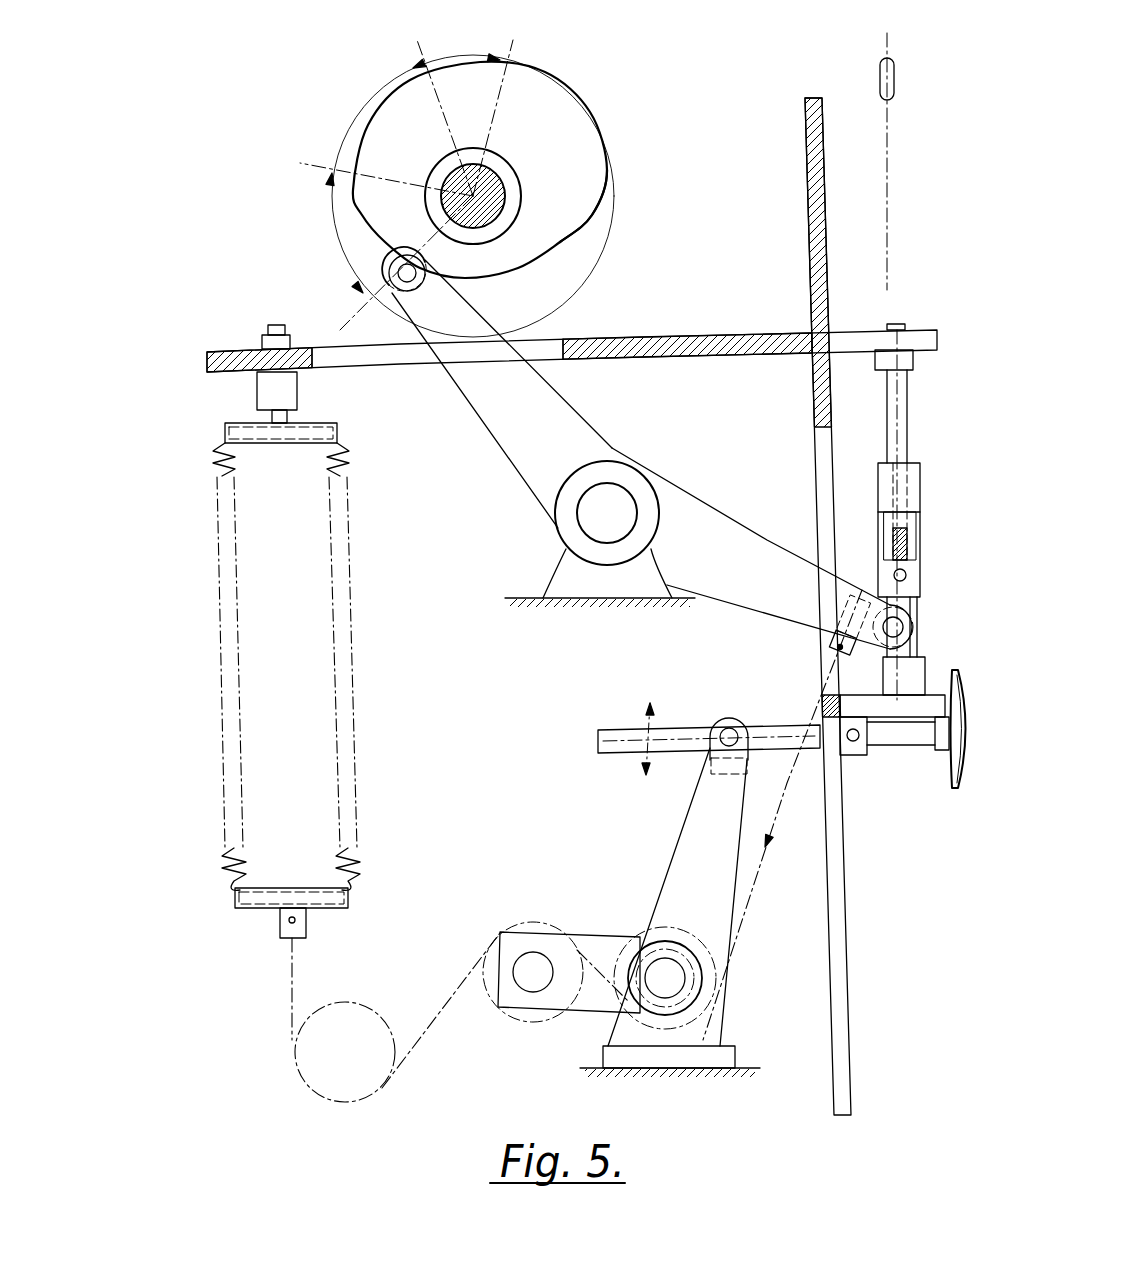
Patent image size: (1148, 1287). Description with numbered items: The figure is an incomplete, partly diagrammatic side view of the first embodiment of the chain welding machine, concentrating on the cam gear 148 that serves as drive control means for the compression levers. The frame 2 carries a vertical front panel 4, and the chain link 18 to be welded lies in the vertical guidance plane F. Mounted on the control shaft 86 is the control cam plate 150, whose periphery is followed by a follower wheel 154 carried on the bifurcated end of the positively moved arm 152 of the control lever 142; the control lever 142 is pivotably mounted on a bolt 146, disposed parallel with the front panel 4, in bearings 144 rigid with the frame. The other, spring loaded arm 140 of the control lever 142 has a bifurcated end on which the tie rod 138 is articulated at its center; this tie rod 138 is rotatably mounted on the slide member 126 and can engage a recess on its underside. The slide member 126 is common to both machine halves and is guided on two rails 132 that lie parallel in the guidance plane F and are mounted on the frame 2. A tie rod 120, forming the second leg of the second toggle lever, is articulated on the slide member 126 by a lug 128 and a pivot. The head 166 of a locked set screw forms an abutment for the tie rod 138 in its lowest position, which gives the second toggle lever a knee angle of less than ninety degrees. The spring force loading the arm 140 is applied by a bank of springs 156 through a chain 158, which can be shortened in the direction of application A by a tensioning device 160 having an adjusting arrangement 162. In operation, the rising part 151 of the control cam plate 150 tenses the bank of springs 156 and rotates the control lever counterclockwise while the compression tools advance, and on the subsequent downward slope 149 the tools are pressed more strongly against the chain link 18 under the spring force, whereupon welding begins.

The frame 2 is at (748, 330).
The vertical front panel 4 is at (821, 606).
The chain link 18 is at (880, 78).
The guidance plane F is at (890, 192).
The control shaft 86 is at (487, 220).
The tie rod 120 is at (895, 545).
The slide member 126 is at (880, 508).
The lug 128 is at (882, 528).
The rails 132 is at (895, 405).
The tie rod 138 is at (878, 650).
The spring loaded arm 140 is at (752, 548).
The control lever 142 is at (600, 448).
The bearings 144 is at (555, 572).
The bolt 146 is at (620, 490).
The cam gear 148 is at (507, 188).
The downward slope 149 is at (378, 112).
The control cam plate 150 is at (508, 170).
The rising part 151 is at (580, 226).
The positively moved arm 152 is at (497, 435).
The follower wheel 154 is at (380, 268).
The bank of springs 156 is at (355, 605).
The chain 158 is at (296, 968).
The tensioning device 160 is at (625, 935).
The adjusting arrangement 162 is at (705, 717).
The head 166 is at (885, 672).
The direction of application A is at (781, 838).